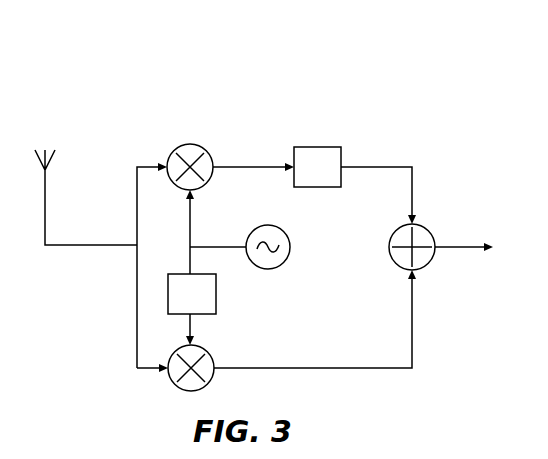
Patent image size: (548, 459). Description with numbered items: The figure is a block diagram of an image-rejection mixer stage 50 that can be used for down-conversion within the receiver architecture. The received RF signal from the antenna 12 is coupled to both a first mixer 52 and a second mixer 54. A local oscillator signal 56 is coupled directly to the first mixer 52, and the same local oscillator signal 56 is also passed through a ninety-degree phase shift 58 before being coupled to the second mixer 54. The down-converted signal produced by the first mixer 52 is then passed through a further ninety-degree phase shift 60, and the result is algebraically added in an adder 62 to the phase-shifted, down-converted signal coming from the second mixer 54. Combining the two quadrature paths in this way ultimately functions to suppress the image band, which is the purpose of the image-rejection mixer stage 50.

The image-rejection mixer stage 50 is at (406, 66).
The antenna 12 is at (45, 197).
The first mixer 52 is at (197, 145).
The second mixer 54 is at (207, 351).
The local oscillator signal 56 is at (285, 236).
The 90 degree phase shift 58 is at (216, 292).
The 90 degree phase shift 60 is at (320, 147).
The algebraic adder 62 is at (427, 229).